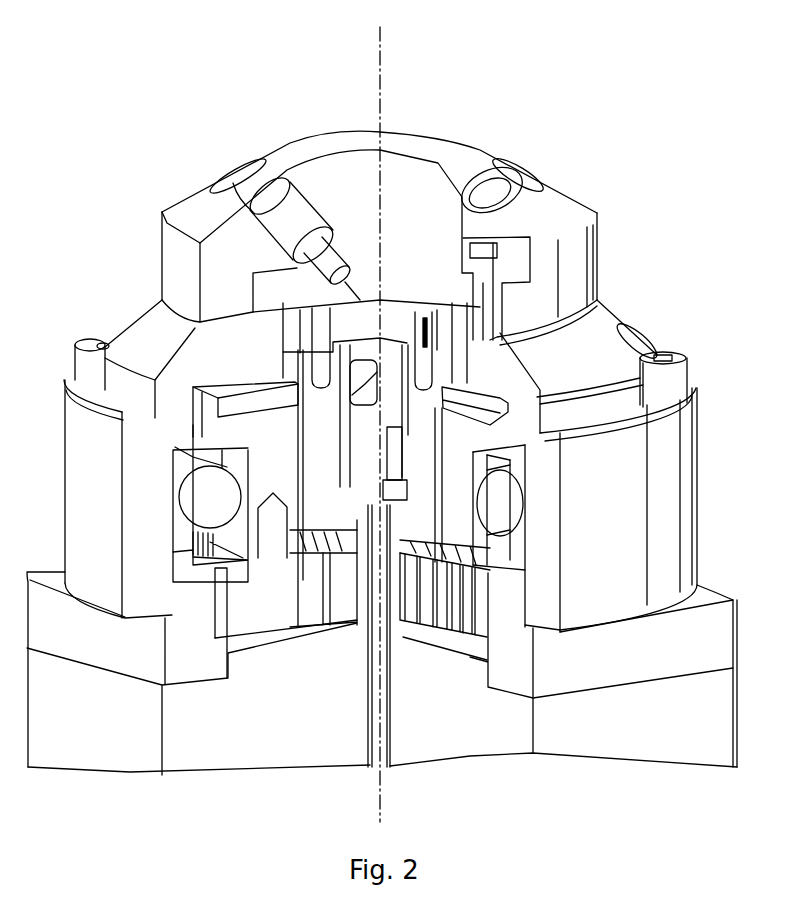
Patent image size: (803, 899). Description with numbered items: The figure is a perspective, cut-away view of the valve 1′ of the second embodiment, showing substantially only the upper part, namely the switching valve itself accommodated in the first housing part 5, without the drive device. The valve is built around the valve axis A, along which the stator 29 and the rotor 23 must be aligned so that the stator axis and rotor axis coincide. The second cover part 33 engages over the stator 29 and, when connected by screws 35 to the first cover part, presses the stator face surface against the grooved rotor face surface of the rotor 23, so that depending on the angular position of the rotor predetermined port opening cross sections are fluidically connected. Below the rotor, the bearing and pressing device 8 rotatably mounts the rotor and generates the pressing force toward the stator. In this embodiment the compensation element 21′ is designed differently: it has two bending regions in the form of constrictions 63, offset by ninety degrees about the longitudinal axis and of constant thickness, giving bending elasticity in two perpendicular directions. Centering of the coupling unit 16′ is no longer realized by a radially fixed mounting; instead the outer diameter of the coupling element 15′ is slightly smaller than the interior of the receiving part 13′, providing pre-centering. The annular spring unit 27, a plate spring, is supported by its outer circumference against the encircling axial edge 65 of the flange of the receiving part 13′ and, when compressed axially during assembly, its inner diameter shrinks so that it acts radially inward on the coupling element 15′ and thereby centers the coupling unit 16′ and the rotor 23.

The valve axis A is at (382, 72).
The valve 1′ is at (606, 148).
The second cover part 33 is at (173, 258).
The stator 29 is at (365, 233).
The screws 35 is at (527, 247).
The rotor 23 is at (384, 312).
The constrictions 63 is at (363, 385).
The spring unit 27 is at (258, 400).
The encircling axial edge 65 is at (202, 390).
The bearing and pressing device 8 is at (184, 447).
The receiving part 13′ is at (188, 466).
The first housing part 5 is at (76, 522).
The coupling unit 16′ is at (438, 425).
The coupling element 15′ is at (428, 468).
The compensation element 21′ is at (437, 523).